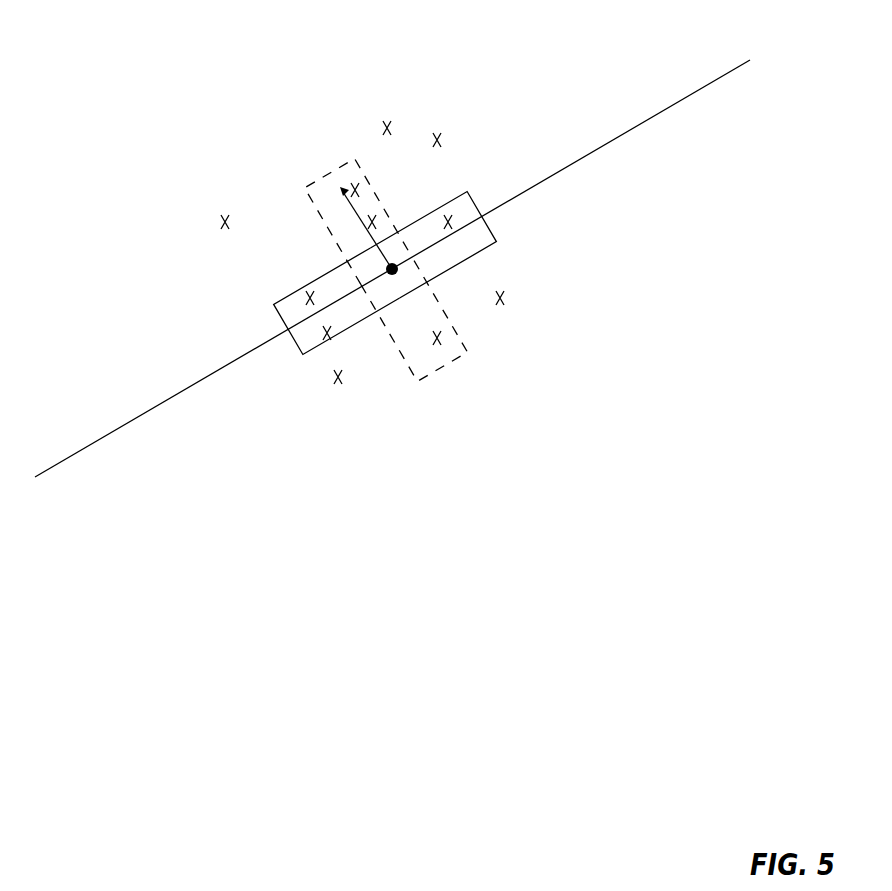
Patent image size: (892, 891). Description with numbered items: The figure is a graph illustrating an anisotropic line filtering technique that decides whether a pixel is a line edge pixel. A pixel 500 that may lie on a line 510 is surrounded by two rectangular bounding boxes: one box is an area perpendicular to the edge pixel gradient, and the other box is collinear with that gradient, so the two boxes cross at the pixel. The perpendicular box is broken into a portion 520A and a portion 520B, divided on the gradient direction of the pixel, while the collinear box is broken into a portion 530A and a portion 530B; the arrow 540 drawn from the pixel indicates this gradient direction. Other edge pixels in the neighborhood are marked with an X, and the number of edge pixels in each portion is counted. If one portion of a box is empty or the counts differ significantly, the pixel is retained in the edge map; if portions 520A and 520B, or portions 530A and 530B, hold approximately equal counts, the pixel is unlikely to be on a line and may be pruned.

The line 510 is at (392, 241).
The pixel 500 is at (484, 309).
The portion of bounding box 520 520A is at (296, 368).
The portion of bounding box 520 520B is at (476, 199).
The portion of bounding box 530 530A is at (313, 192).
The portion of bounding box 530 530B is at (463, 364).
The arrow (direction vector) 540 is at (442, 161).